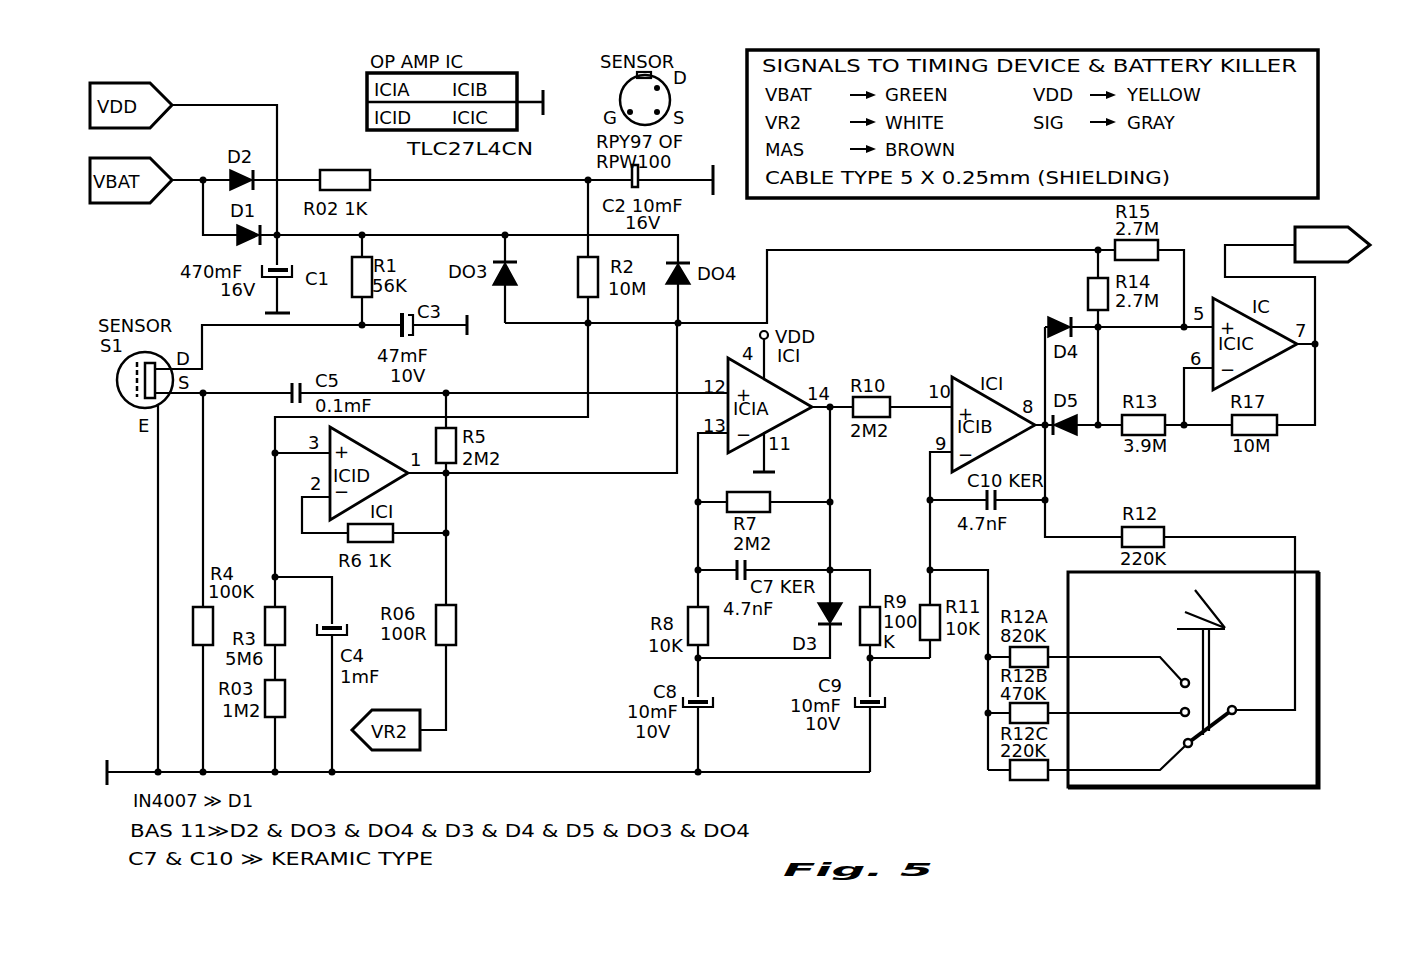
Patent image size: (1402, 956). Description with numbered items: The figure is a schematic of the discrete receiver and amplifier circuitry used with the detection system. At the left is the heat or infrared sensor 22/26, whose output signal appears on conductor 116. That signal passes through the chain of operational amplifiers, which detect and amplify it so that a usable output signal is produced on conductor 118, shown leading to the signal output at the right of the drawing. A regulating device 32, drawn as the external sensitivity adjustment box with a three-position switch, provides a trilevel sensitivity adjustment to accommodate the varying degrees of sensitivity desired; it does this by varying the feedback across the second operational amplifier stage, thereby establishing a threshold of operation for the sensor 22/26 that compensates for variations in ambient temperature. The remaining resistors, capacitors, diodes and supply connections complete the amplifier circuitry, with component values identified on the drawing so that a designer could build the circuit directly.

The heat sensor or infrared sensor 22 is at (132, 407).
The heat sensor or infrared sensor 26 is at (123, 405).
The conductor 116 is at (228, 392).
The conductor 118 is at (1272, 220).
The regulating device 32 is at (1342, 730).